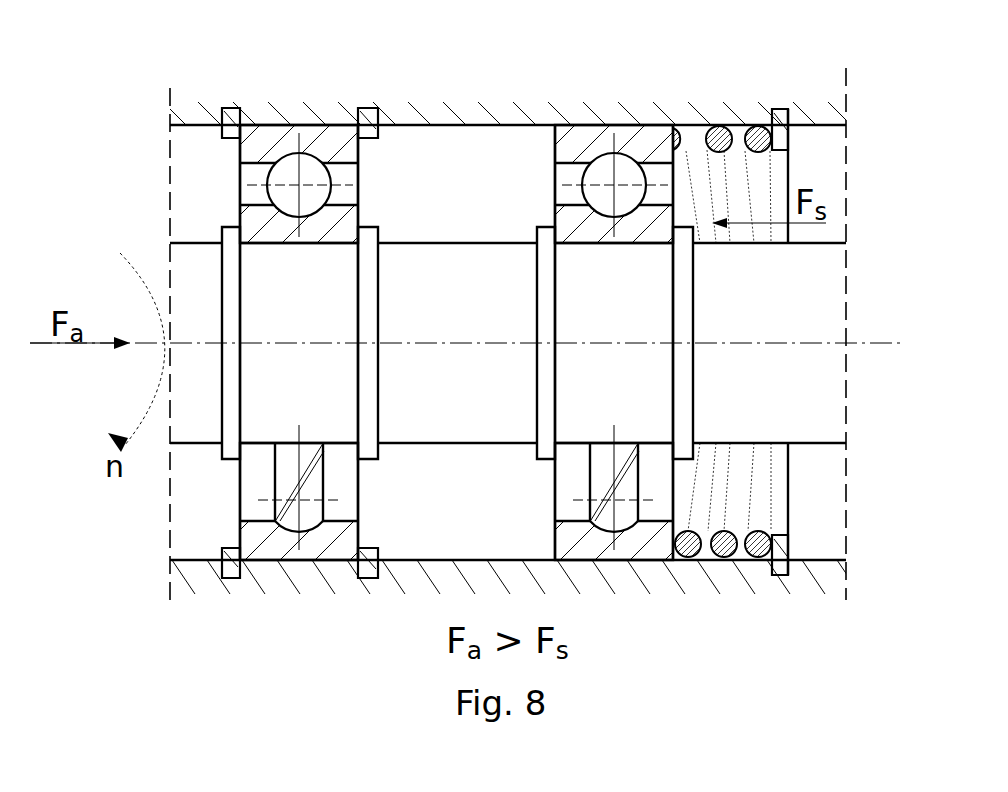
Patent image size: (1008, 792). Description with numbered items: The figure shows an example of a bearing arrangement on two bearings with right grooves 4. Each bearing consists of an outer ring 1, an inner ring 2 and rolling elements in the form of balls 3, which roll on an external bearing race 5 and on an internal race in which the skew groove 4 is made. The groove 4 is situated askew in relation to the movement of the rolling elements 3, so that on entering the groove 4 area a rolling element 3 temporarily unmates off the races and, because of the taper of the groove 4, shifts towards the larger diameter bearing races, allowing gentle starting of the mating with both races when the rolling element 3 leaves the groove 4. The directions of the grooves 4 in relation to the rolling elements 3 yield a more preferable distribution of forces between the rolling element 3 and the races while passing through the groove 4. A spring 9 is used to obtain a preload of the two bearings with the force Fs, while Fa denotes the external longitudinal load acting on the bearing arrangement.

The outer ring 1 is at (252, 142).
The inner ring 2 is at (350, 210).
The balls 3 is at (308, 163).
The skew groove 4 is at (618, 560).
The external bearing race 5 is at (292, 517).
The spring 9 is at (693, 562).